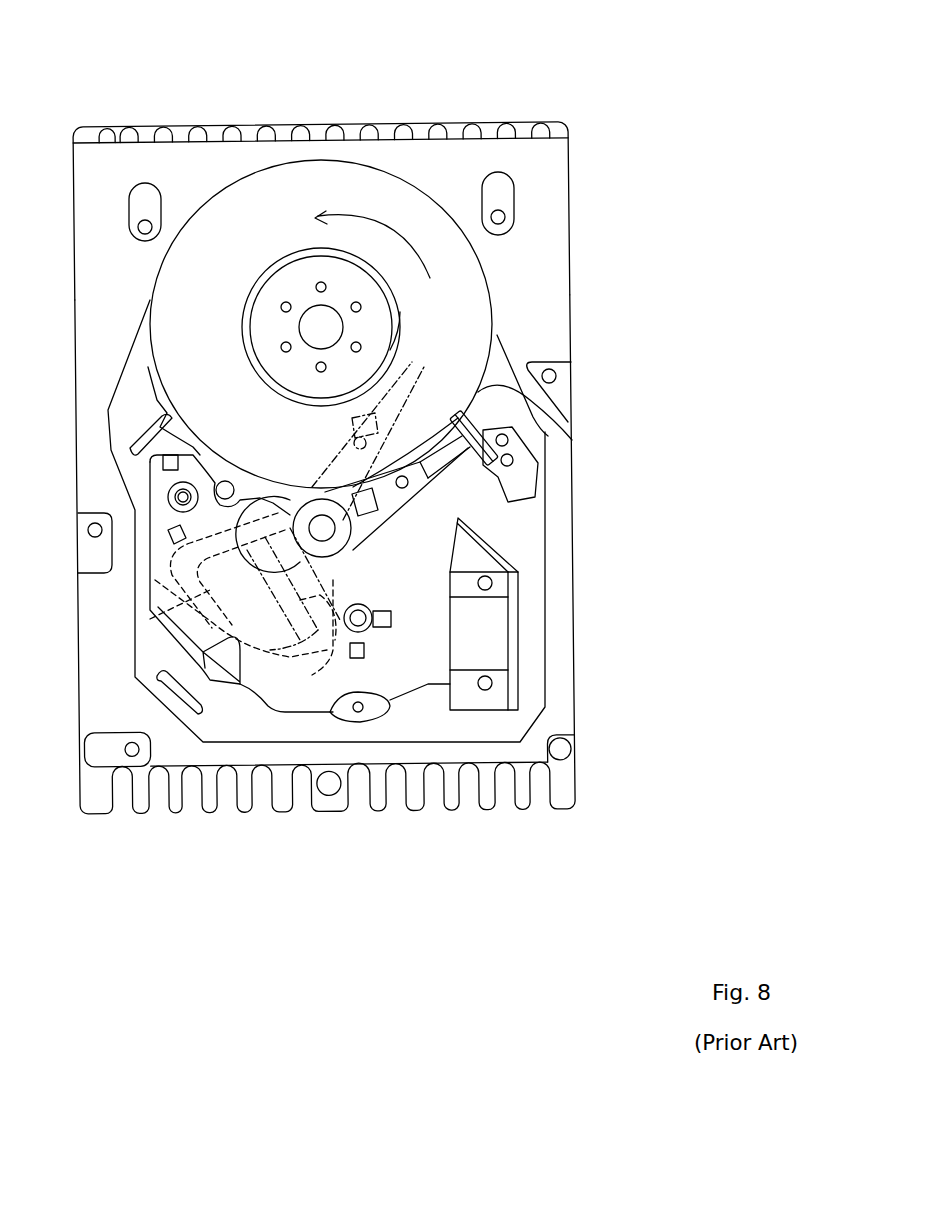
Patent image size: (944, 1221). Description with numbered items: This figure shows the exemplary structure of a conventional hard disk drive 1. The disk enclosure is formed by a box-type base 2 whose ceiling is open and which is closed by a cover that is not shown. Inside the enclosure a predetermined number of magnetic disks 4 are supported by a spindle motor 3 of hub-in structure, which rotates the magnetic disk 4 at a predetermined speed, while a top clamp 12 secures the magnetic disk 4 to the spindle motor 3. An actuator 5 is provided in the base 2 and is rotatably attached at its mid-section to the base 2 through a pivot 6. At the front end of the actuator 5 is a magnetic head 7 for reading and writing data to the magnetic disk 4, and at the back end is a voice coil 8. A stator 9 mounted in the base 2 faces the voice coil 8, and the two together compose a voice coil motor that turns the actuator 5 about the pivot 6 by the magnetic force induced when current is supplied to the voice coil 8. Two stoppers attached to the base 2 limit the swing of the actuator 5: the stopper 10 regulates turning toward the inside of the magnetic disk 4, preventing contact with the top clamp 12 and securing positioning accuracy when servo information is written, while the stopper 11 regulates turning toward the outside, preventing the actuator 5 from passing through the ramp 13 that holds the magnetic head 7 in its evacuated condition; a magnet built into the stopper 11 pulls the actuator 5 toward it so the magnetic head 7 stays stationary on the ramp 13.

The hard disk drive 1 is at (541, 88).
The base 2 is at (551, 247).
The spindle motor 3 is at (320, 322).
The magnetic disk 4 is at (172, 297).
The actuator 5 is at (380, 508).
The pivot 6 is at (325, 530).
The magnetic head 7 is at (446, 452).
The voice coil 8 is at (150, 619).
The stator 9 is at (152, 580).
The stopper 10 is at (366, 660).
The stopper 11 is at (172, 532).
The top clamp 12 is at (398, 328).
The ramp 13 is at (495, 411).